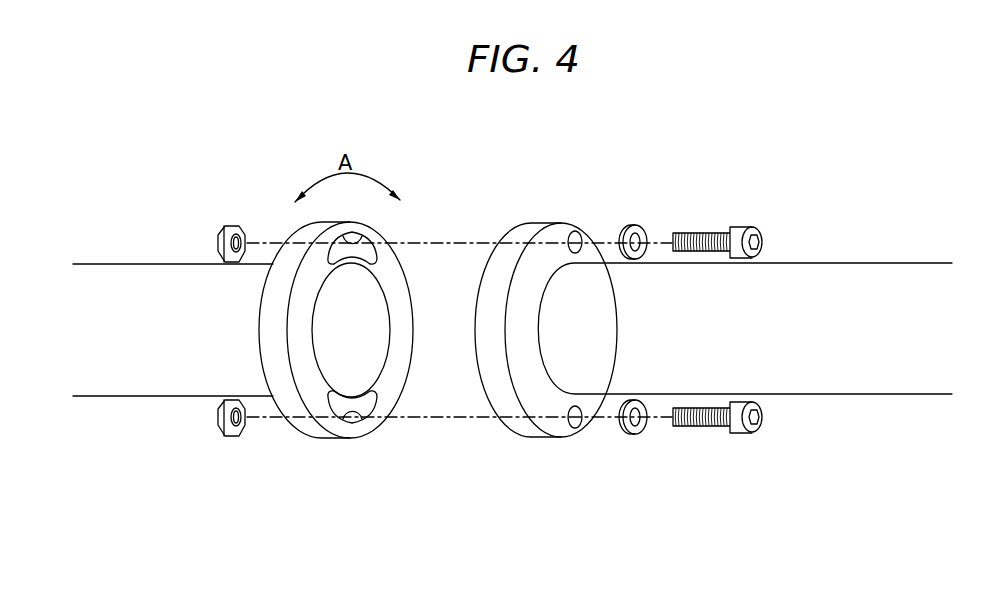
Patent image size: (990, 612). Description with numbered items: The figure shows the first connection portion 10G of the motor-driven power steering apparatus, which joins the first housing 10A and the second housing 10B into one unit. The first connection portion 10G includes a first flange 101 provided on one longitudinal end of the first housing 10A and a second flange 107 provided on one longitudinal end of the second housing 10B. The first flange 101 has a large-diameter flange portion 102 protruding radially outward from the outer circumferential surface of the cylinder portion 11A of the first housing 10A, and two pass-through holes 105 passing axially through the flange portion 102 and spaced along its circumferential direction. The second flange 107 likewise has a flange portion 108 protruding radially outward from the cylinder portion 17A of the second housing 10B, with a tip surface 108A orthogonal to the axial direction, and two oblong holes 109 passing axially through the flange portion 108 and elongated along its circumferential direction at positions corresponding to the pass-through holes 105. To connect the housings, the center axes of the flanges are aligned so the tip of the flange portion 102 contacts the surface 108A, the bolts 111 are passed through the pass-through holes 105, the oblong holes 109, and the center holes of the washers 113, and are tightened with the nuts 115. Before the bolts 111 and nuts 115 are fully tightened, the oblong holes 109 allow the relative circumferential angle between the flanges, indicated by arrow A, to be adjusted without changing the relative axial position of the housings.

The first housing 10A is at (861, 218).
The second housing 10B is at (189, 226).
The first connection portion 10G is at (507, 543).
The cylinder portion of the first housing 11A is at (808, 263).
The cylinder portion of the second housing 17A is at (108, 264).
The first flange 101 is at (493, 432).
The flange portion 102 is at (522, 425).
The pass-through holes 105 is at (578, 232).
The second flange 107 is at (395, 433).
The flange portion 108 is at (295, 418).
The tip surface 108A is at (403, 312).
The oblong holes 109 is at (357, 237).
The bolts 111 is at (726, 236).
The washers 113 is at (646, 226).
The nuts 115 is at (230, 227).